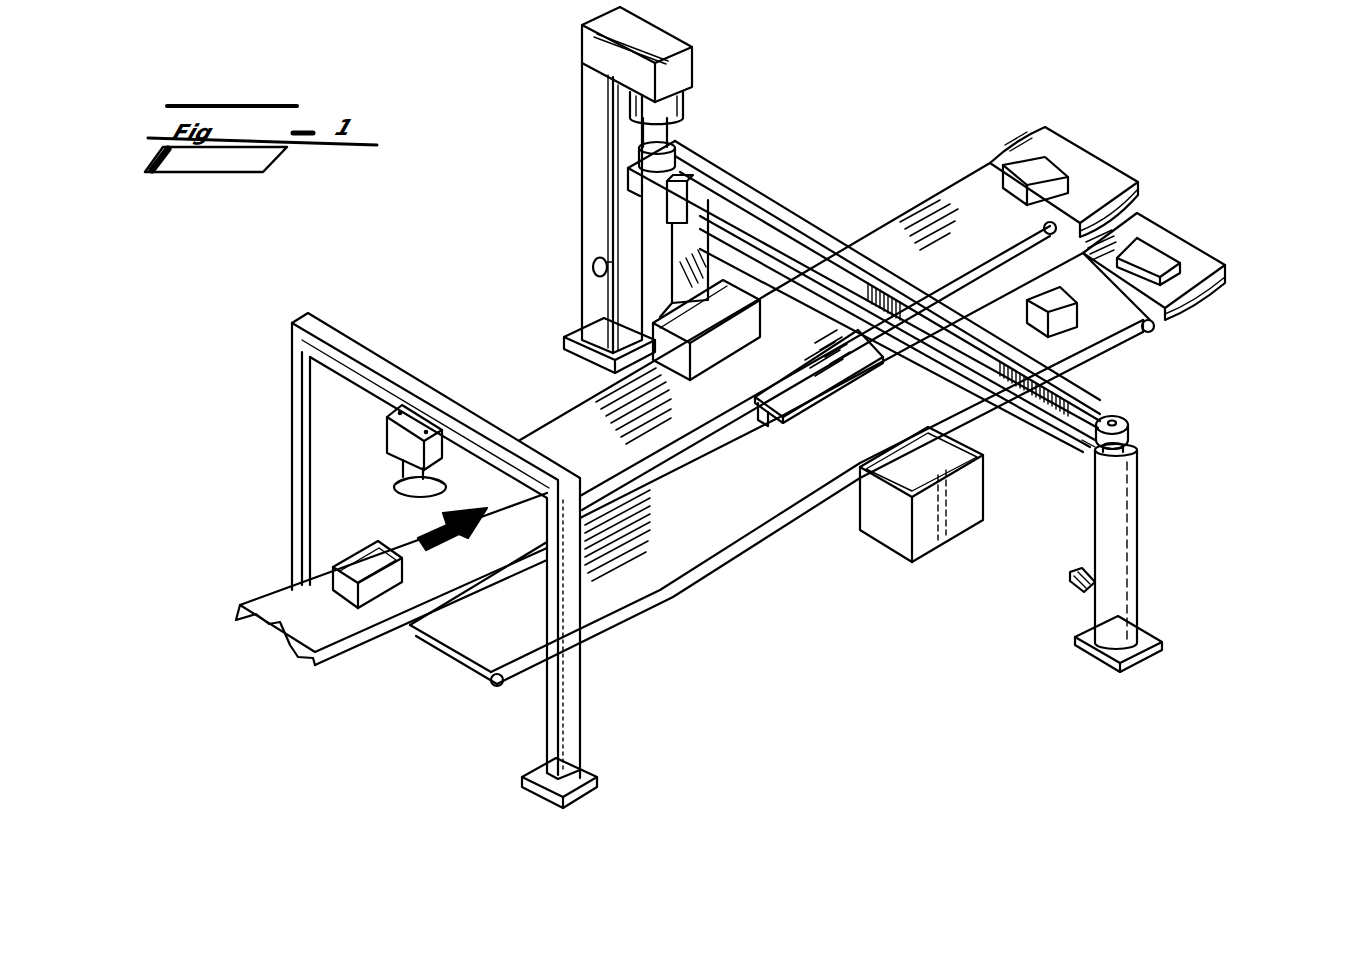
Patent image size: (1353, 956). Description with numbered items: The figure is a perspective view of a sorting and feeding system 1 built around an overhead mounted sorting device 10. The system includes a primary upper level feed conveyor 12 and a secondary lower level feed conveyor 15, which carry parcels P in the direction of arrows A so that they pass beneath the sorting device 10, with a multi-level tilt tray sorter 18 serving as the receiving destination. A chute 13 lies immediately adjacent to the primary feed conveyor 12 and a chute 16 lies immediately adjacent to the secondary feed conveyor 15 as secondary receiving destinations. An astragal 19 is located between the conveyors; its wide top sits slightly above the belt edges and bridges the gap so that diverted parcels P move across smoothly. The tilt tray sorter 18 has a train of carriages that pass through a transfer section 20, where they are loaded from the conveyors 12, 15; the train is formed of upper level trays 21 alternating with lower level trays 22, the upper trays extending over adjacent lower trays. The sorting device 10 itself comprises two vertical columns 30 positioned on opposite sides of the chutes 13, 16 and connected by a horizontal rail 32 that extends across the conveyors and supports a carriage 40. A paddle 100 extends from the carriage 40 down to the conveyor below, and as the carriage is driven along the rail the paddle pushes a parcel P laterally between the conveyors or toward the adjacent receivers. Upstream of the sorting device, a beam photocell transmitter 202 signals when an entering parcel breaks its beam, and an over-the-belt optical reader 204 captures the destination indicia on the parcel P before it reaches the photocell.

The sorting and feeding system 1 is at (367, 733).
The sorting device 10 is at (1133, 402).
The primary upper level feed conveyor 12 is at (263, 578).
The chute 13 is at (700, 318).
The secondary lower level feed conveyor 15 is at (530, 680).
The chute 16 is at (945, 448).
The multi-level tilt tray sorter 18 is at (1190, 207).
The astragal 19 is at (817, 402).
The transfer section 20 is at (972, 172).
The upper level trays 21 is at (1115, 155).
The lower level trays 22 is at (1213, 303).
The vertical columns 30 is at (590, 190).
The horizontal rail 32 is at (1078, 454).
The carriage 40 is at (683, 198).
The paddle 100 is at (700, 240).
The beam photocell transmitter 202 is at (1083, 552).
The over-the-belt optical reader 204 is at (375, 429).
The parcels P is at (350, 590).
The arrows A is at (462, 518).